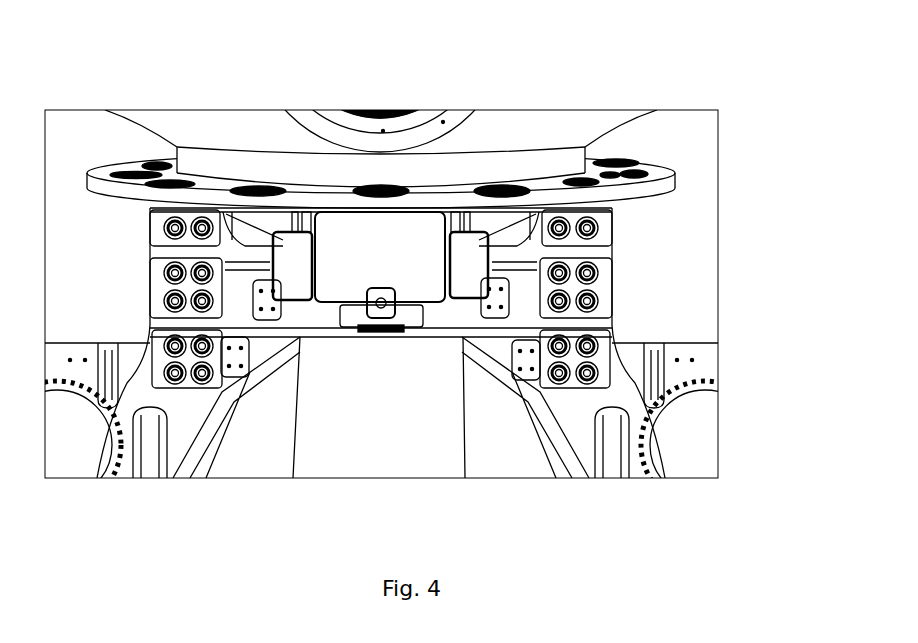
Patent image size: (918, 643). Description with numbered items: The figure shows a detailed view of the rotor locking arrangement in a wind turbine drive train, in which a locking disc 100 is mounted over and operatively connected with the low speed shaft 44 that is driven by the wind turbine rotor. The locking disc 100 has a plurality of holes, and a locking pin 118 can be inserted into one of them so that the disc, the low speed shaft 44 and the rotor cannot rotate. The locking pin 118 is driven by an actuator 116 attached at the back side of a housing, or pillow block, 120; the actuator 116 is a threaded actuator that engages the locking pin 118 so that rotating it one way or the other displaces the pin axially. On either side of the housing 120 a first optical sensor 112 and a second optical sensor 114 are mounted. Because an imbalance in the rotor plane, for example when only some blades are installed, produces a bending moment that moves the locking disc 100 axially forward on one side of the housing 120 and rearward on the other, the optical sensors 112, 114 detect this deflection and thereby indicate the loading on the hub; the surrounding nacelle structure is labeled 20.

The nacelle / rotor hub housing 20 is at (552, 133).
The low speed shaft 44 is at (437, 433).
The locking disc 100 is at (675, 190).
The first optical sensor 112 is at (288, 282).
The second optical sensor 114 is at (473, 278).
The actuator 116 is at (355, 325).
The locking pin 118 is at (380, 186).
The housing 120 is at (345, 247).